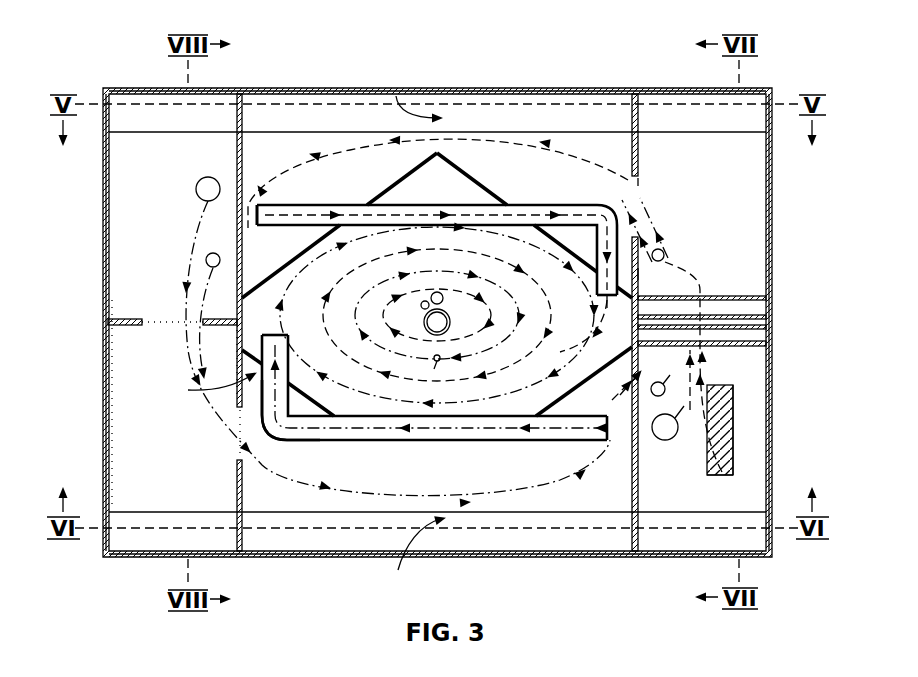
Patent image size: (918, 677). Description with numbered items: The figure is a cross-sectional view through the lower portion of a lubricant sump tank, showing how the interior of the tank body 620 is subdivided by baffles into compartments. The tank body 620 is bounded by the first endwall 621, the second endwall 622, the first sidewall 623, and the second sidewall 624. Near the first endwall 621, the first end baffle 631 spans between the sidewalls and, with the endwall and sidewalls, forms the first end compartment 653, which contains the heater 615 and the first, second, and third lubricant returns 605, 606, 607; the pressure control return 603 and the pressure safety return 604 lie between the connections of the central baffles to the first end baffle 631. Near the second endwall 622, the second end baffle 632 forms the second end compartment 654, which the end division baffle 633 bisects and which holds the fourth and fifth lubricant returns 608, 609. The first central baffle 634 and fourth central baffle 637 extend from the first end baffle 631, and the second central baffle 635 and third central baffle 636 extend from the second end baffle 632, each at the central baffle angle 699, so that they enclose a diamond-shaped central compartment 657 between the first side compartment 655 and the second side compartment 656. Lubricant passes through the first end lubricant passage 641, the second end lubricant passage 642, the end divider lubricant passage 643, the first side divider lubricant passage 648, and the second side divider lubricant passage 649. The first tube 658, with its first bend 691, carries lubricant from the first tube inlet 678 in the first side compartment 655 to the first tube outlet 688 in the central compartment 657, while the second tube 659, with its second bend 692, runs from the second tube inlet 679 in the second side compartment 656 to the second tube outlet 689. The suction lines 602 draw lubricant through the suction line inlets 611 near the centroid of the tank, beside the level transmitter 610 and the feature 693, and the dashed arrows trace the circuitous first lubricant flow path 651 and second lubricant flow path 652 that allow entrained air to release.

The suction lines 602 is at (430, 316).
The pressure control return 603 is at (758, 297).
The pressure safety return 604 is at (758, 322).
The first lubricant return 605 is at (735, 392).
The second lubricant return 606 is at (758, 344).
The third lubricant return 607 is at (665, 258).
The fourth lubricant return 608 is at (196, 187).
The fifth lubricant return 609 is at (206, 258).
The level transmitter 610 is at (435, 362).
The suction line inlet 611 is at (430, 304).
The heater 615 is at (735, 462).
The tank body 620 is at (766, 88).
The first endwall 621 is at (772, 195).
The second endwall 622 is at (104, 415).
The first sidewall 623 is at (528, 88).
The second sidewall 624 is at (528, 557).
The first end baffle 631 is at (638, 480).
The second end baffle 632 is at (237, 478).
The end division baffle 633 is at (116, 318).
The first central baffle 634 is at (503, 206).
The second central baffle 635 is at (400, 195).
The third central baffle 636 is at (385, 442).
The fourth central baffle 637 is at (495, 442).
The first end lubricant passage 641 is at (638, 190).
The second end lubricant passage 642 is at (237, 447).
The end divider lubricant passage 643 is at (172, 327).
The first side divider lubricant passage 648 is at (409, 86).
The second side divider lubricant passage 649 is at (410, 555).
The first lubricant flow path 651 is at (650, 213).
The second lubricant flow path 652 is at (188, 350).
The first end compartment 653 is at (735, 430).
The second end compartment 654 is at (130, 373).
The first side compartment 655 is at (570, 140).
The second side compartment 656 is at (582, 513).
The central compartment 657 is at (280, 288).
The first tube 658 is at (473, 205).
The second tube 659 is at (318, 441).
The first tube inlet 678 is at (256, 213).
The second tube inlet 679 is at (638, 438).
The first tube outlet 688 is at (634, 270).
The second tube outlet 689 is at (262, 325).
The first bend 691 is at (612, 262).
The second bend 692 is at (604, 320).
The channel outlet 693 is at (613, 300).
The central baffle angle 699 is at (200, 247).